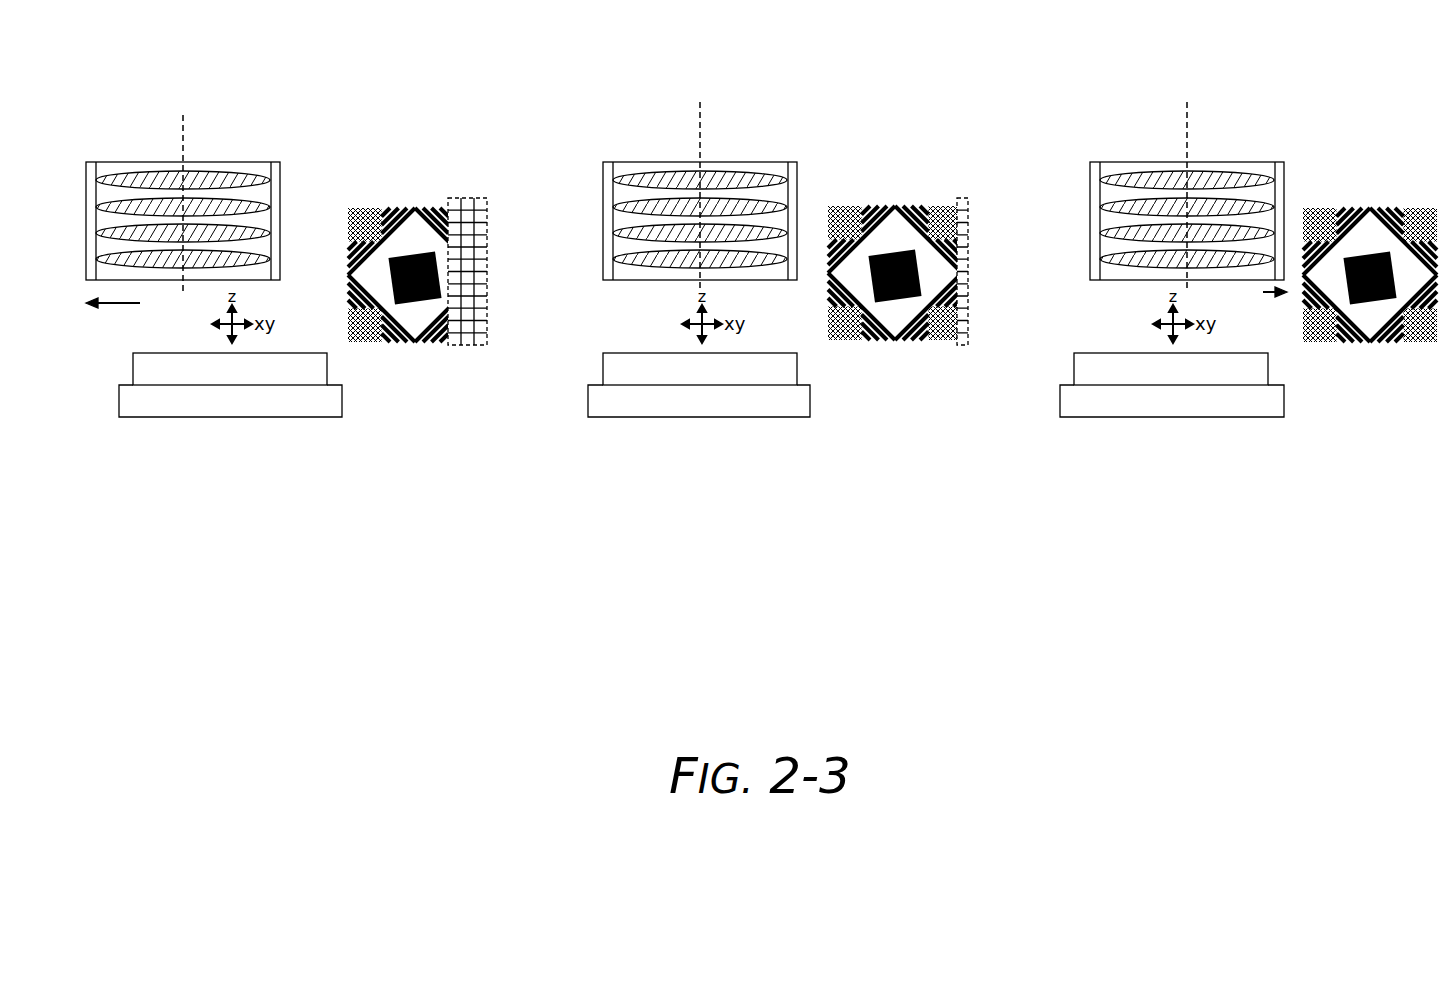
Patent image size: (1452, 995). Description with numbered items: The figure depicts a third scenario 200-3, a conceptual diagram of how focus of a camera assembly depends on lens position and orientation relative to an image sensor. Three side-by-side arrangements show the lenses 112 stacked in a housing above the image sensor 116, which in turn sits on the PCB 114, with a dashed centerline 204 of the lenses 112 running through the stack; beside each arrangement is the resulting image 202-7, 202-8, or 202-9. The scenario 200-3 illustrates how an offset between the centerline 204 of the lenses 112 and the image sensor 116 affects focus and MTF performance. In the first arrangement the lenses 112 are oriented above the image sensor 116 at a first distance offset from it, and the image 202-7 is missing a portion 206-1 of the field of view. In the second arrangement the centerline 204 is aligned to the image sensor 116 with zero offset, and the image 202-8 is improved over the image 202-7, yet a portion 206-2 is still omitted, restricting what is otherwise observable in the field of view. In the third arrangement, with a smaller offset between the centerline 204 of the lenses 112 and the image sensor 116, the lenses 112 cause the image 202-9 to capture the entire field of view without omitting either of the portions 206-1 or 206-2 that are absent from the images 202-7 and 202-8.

The third scenario 200-3 is at (187, 80).
The lenses 112 is at (148, 170).
The centerline 204 is at (184, 135).
The image sensor 116 is at (700, 369).
The PCB 114 is at (701, 401).
The image 202-7 is at (415, 206).
The image 202-8 is at (936, 205).
The image 202-9 is at (1420, 207).
The portion 206-1 is at (448, 345).
The portion 206-2 is at (966, 345).